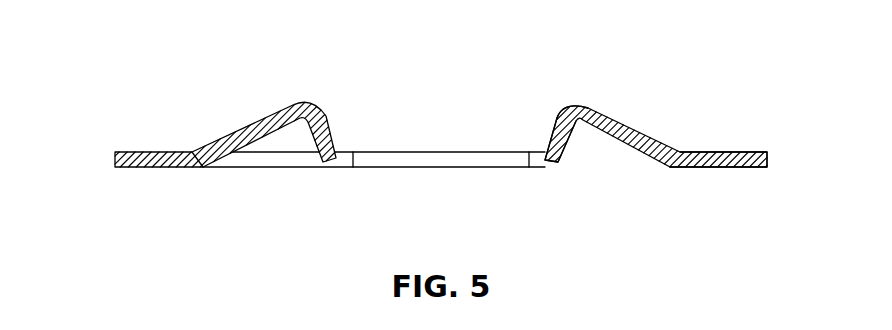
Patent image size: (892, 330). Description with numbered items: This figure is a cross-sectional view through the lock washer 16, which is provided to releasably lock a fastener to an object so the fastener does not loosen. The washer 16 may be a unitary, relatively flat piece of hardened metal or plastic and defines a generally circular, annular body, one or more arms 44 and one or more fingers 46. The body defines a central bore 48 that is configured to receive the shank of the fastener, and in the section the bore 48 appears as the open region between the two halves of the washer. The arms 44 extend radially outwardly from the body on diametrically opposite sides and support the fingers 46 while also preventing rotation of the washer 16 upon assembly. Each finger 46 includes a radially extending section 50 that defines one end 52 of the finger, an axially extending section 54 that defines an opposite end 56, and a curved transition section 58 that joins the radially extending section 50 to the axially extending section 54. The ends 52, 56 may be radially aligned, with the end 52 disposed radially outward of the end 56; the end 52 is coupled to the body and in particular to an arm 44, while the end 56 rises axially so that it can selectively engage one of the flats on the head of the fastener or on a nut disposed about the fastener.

The washer 16 is at (227, 94).
The arm 44 is at (283, 155).
The finger 46 is at (237, 157).
The bore 48 is at (415, 157).
The radially extending section 50 is at (638, 122).
The end 52 is at (687, 138).
The axially extending section 54 is at (552, 127).
The end 56 is at (536, 138).
The curved transition section 58 is at (577, 104).